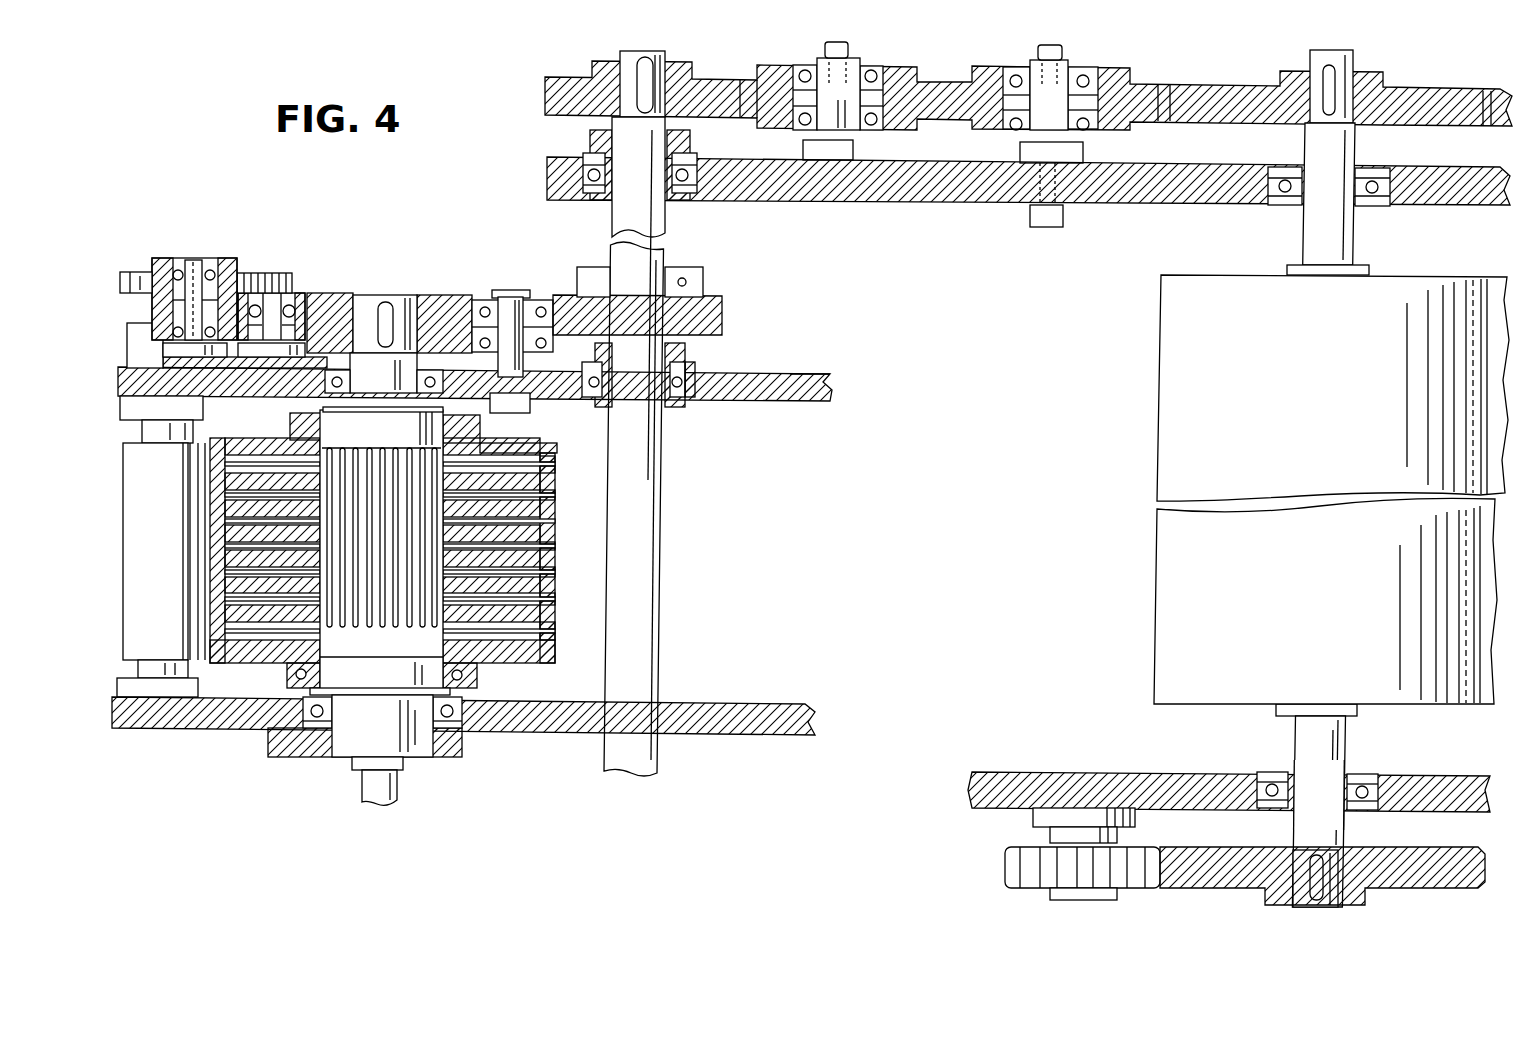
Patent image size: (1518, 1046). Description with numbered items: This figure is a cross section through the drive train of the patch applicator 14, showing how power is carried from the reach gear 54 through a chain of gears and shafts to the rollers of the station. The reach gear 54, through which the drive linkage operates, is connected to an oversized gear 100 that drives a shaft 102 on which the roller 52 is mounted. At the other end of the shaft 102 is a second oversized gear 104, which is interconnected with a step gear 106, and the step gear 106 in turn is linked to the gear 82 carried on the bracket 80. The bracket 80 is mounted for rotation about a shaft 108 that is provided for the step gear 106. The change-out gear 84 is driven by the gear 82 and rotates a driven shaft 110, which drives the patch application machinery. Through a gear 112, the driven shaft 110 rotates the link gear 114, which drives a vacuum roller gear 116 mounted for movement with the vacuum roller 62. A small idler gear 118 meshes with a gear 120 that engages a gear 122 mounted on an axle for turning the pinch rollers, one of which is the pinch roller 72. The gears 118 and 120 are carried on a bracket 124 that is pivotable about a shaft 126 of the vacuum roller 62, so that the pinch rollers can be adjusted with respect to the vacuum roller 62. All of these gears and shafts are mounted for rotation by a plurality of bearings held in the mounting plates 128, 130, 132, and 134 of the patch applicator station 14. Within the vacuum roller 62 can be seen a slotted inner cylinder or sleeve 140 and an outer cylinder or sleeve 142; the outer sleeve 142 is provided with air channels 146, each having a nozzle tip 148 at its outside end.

The patch applicator 14 is at (508, 182).
The roller 52 is at (1157, 620).
The reach gear 54 is at (1036, 890).
The vacuum roller 62 is at (544, 440).
The pinch roller 72 is at (189, 662).
The bracket 80 is at (930, 194).
The gear 82 is at (903, 78).
The change-out gear 84 is at (688, 78).
The oversized gear 100 is at (1196, 888).
The shaft 102 is at (1348, 758).
The second oversized gear 104 is at (1408, 88).
The step gear 106 is at (1137, 86).
The shaft 108 is at (1070, 156).
The driven shaft 110 is at (662, 214).
The gear 112 is at (722, 306).
The link gear 114 is at (541, 297).
The vacuum roller gear 116 is at (433, 296).
The small idler gear 118 is at (295, 290).
The gear 120 is at (230, 274).
The gear 122 is at (134, 271).
The bracket 124 is at (220, 398).
The shaft 126 is at (398, 790).
The mounting plate 128 is at (1154, 205).
The mounting plate 130 is at (1074, 772).
The mounting plate 132 is at (830, 375).
The mounting plate 134 is at (745, 704).
The slotted inner cylinder 140 is at (404, 441).
The outer cylinder 142 is at (552, 526).
The air channel 146 is at (540, 545).
The nozzle tip 148 is at (550, 602).